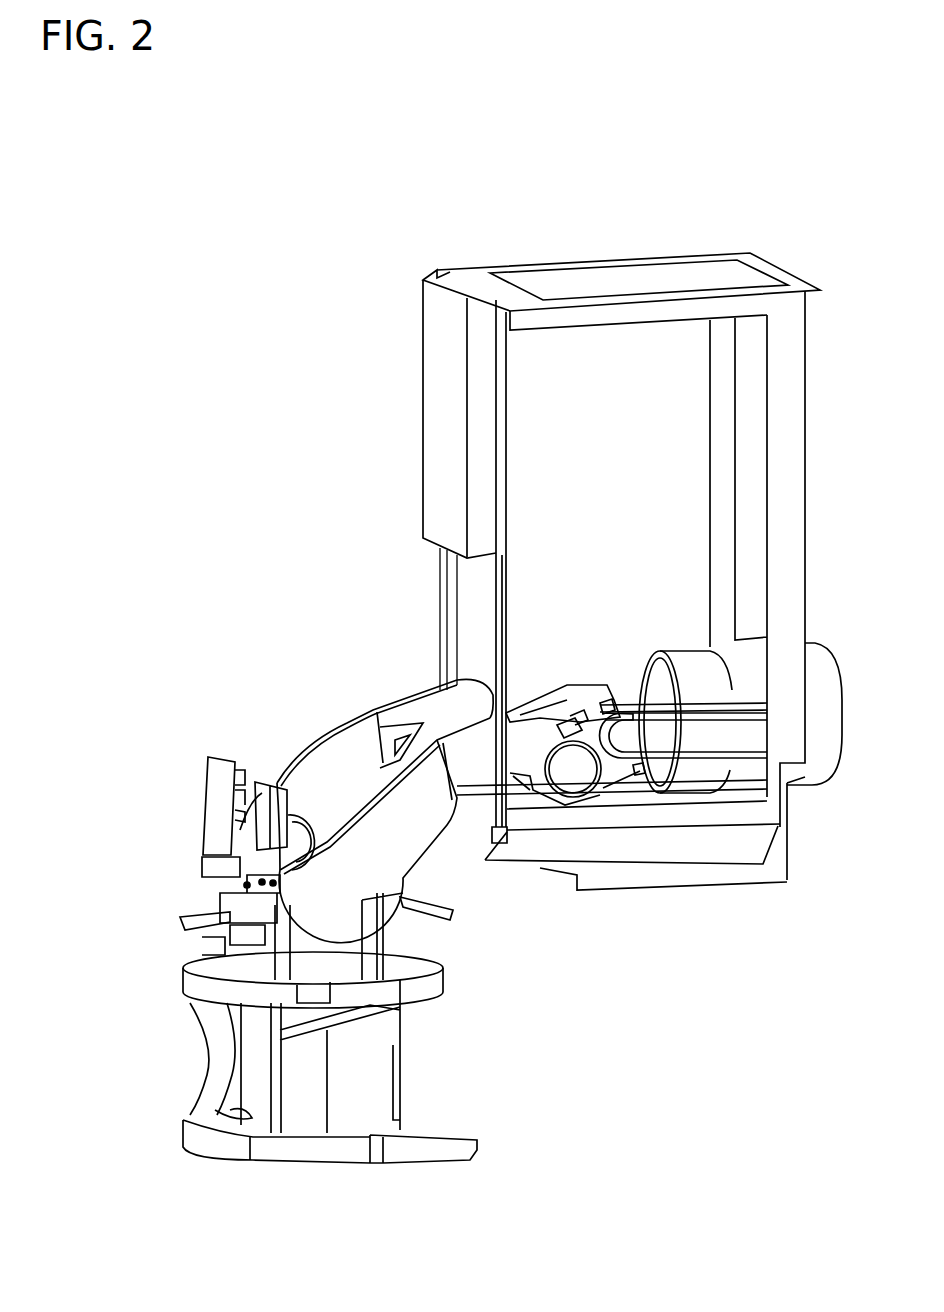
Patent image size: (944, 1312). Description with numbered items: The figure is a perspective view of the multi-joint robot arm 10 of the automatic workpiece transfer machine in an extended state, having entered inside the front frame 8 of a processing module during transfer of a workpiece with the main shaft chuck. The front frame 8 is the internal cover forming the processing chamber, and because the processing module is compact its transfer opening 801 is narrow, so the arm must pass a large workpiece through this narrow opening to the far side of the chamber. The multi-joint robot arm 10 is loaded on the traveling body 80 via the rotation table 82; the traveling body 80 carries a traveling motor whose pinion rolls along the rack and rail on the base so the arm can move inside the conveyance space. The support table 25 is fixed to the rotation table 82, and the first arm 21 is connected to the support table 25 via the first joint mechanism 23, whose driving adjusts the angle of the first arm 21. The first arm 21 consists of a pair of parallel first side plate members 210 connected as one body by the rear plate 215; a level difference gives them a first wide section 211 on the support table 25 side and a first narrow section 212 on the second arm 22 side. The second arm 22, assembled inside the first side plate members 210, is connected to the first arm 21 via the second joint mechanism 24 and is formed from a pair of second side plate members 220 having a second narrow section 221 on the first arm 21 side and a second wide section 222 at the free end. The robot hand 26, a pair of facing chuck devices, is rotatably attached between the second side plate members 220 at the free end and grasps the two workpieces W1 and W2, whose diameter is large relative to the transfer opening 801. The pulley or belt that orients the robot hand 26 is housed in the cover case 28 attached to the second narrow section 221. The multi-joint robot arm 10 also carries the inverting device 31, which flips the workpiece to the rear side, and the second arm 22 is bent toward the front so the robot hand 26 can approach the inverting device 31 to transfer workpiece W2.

The front frame 8 is at (443, 373).
The transfer opening 801 is at (470, 577).
The robot hand 26 is at (752, 798).
The cover case 28 is at (740, 737).
The workpiece W1 is at (823, 690).
The workpiece W2 is at (715, 645).
The multi-joint robot arm 10 is at (243, 640).
The traveling body 80 is at (367, 1083).
The rotation table 82 is at (423, 985).
The support table 25 is at (330, 967).
The first arm 21 is at (375, 705).
The first side plate member 210 is at (340, 750).
The rear plate 215 is at (385, 692).
The first wide section 211 is at (403, 827).
The first joint mechanism 23 is at (280, 788).
The inverting device 31 is at (203, 857).
The second arm 22 is at (563, 687).
The second side plate member 220 is at (677, 607).
The second narrow section 221 is at (560, 718).
The second wide section 222 is at (622, 690).
The second joint mechanism 24 is at (578, 770).
The first narrow section 212 is at (525, 762).